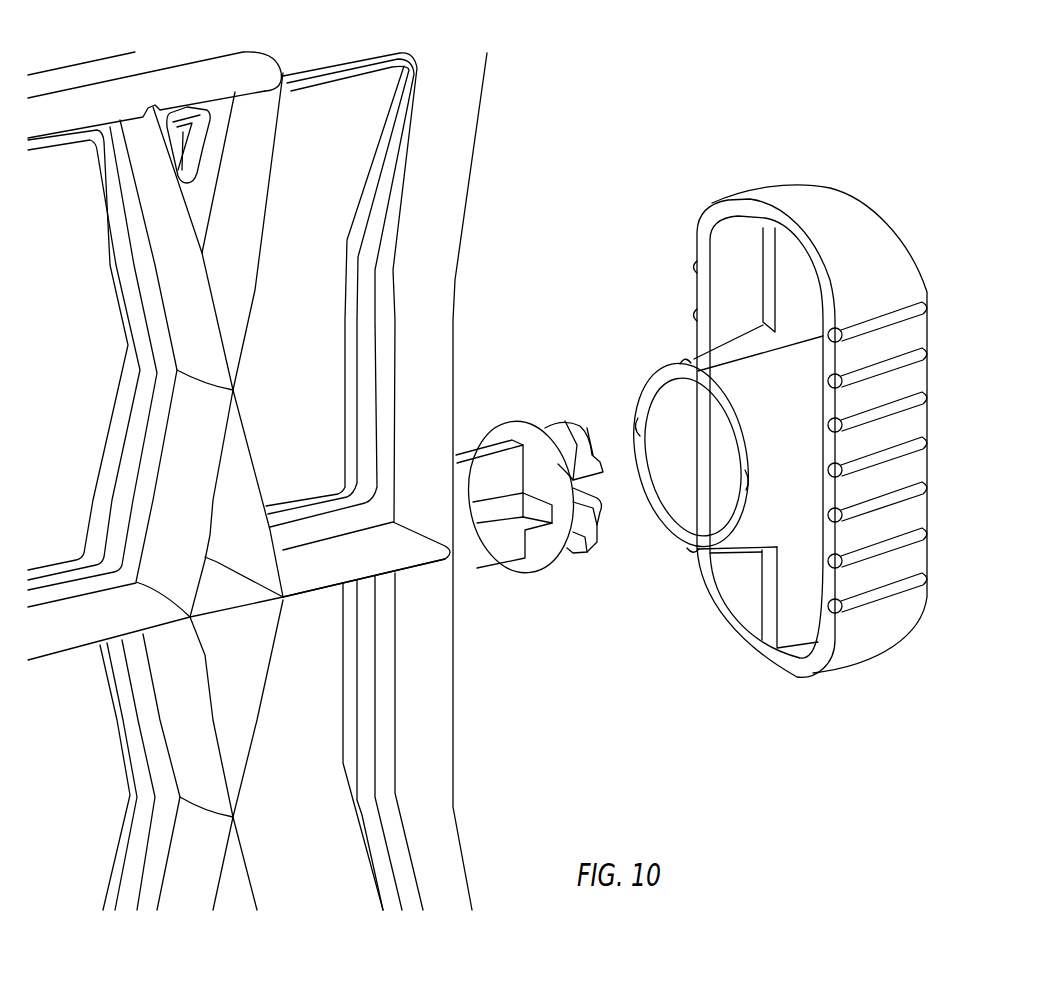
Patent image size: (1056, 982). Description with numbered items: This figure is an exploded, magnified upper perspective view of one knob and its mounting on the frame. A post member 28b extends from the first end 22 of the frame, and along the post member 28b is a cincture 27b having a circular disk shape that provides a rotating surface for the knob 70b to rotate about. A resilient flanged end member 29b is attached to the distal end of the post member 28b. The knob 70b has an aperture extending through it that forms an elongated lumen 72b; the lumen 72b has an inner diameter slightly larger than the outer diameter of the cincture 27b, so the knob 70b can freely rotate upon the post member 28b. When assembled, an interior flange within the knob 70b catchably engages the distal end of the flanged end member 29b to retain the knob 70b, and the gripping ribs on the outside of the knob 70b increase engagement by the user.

The first end 22 is at (432, 718).
The cincture 27b is at (464, 560).
The post member 28b is at (517, 507).
The flanged end member 29b is at (573, 427).
The knob 70b is at (837, 250).
The elongated lumen 72b is at (686, 468).